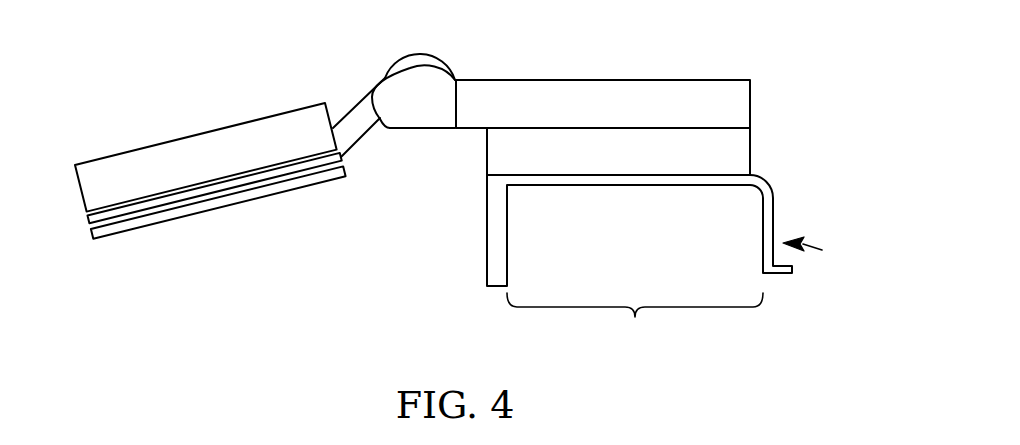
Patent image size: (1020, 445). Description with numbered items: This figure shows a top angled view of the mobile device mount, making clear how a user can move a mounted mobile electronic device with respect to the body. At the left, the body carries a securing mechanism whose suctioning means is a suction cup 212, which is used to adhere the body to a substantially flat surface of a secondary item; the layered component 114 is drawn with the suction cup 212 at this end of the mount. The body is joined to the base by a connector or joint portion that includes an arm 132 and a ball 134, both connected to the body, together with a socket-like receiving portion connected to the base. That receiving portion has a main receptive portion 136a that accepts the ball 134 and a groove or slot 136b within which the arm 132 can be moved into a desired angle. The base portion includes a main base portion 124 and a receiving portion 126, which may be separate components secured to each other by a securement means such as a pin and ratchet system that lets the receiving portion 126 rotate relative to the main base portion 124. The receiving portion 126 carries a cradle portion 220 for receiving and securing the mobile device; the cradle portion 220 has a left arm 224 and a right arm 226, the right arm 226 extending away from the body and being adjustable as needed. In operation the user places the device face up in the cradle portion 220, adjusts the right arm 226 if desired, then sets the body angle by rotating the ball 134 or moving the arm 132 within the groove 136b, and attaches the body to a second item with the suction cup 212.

The display panel 114 is at (188, 142).
The suction cup 212 is at (202, 218).
The arm 132 is at (355, 119).
The ball 134 is at (422, 58).
The main receptive portion 136a is at (423, 105).
The groove or slot 136b is at (388, 117).
The main base portion 124 is at (607, 91).
The receiving portion 126 is at (629, 165).
The left arm 224 is at (505, 284).
The cradle portion 220 is at (635, 323).
The right arm 226 is at (819, 249).